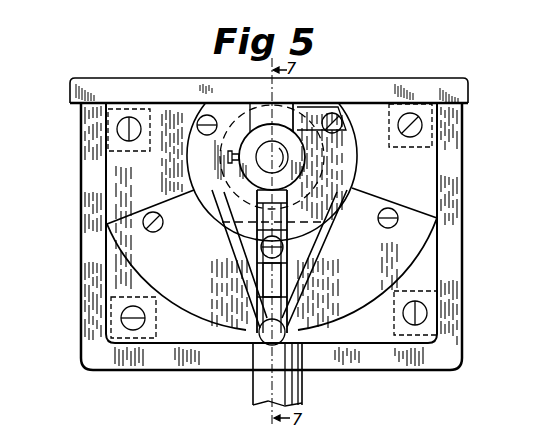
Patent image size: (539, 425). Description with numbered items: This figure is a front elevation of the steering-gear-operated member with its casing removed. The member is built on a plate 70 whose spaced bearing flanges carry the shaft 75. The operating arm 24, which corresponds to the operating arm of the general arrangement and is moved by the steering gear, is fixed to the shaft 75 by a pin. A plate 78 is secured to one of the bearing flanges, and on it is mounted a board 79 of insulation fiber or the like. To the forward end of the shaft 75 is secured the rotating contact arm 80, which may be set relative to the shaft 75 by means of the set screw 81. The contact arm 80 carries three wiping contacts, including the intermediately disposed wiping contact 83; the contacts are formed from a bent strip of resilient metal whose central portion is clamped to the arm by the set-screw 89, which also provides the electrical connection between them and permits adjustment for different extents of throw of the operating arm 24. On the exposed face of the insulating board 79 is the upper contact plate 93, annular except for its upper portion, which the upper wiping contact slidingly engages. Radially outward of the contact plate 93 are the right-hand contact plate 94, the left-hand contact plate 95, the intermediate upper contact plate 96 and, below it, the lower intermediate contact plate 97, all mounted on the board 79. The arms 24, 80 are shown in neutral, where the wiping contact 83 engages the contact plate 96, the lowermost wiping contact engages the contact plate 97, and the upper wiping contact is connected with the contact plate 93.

The operating arm 24 is at (257, 394).
The plate 70 is at (427, 80).
The shaft 75 is at (305, 157).
The plate 78 is at (452, 315).
The board 79 is at (370, 327).
The rotating contact arm 80 is at (262, 297).
The set screw 81 is at (228, 156).
The intermediately disposed wiping contact 83 is at (263, 277).
The set-screw 89 is at (262, 250).
The upper contact plate 93 is at (350, 108).
The right-hand contact plate 94 is at (405, 250).
The left-hand contact plate 95 is at (157, 267).
The intermediate upper contact plate 96 is at (330, 238).
The lower intermediate contact plate 97 is at (258, 336).